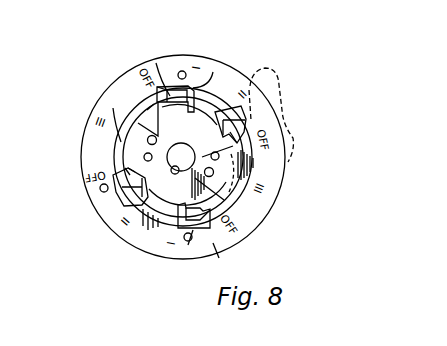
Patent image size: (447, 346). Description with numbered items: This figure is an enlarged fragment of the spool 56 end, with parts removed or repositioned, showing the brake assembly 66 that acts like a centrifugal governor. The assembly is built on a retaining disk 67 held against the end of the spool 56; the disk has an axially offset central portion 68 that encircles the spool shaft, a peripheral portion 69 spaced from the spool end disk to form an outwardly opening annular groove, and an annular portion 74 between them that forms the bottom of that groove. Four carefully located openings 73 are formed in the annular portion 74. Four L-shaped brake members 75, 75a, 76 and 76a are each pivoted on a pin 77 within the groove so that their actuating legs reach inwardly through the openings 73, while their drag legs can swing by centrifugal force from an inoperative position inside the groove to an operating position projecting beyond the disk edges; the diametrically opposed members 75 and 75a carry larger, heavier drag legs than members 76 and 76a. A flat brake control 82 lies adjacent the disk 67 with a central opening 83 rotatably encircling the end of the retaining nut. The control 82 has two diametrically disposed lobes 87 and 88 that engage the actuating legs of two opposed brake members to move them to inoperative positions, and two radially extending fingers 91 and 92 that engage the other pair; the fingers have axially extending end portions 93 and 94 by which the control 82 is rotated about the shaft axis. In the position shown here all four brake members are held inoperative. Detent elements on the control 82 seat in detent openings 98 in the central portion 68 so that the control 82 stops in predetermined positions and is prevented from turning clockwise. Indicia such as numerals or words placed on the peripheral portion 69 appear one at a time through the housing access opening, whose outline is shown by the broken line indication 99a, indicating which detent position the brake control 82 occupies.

The spool 56 is at (106, 229).
The brake assembly 66 is at (147, 238).
The retaining disk 67 is at (193, 252).
The central portion 68 is at (133, 142).
The peripheral portion 69 is at (226, 257).
The openings 73 is at (156, 63).
The annular portion 74 is at (228, 180).
The brake member 75 is at (213, 72).
The brake member 75a is at (173, 242).
The brake member 76 is at (247, 118).
The brake member 76a is at (120, 192).
The pin 77 is at (182, 70).
The brake control 82 is at (148, 110).
The central opening 83 is at (176, 174).
The lobe 87 is at (157, 100).
The lobe 88 is at (232, 203).
The finger 91 is at (220, 142).
The finger 92 is at (130, 170).
The end portion 93 is at (245, 154).
The end portion 94 is at (128, 172).
The detent openings 98 is at (153, 136).
The broken line indication 99a is at (273, 67).